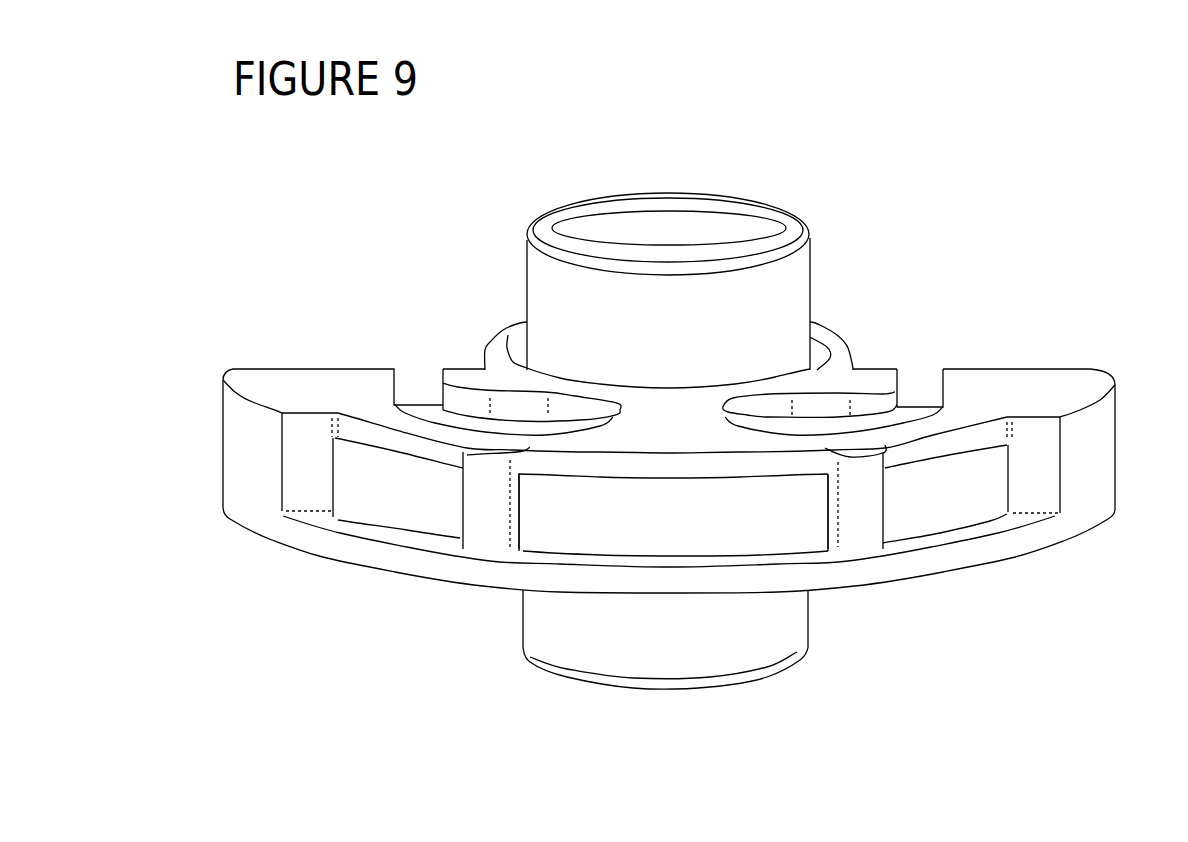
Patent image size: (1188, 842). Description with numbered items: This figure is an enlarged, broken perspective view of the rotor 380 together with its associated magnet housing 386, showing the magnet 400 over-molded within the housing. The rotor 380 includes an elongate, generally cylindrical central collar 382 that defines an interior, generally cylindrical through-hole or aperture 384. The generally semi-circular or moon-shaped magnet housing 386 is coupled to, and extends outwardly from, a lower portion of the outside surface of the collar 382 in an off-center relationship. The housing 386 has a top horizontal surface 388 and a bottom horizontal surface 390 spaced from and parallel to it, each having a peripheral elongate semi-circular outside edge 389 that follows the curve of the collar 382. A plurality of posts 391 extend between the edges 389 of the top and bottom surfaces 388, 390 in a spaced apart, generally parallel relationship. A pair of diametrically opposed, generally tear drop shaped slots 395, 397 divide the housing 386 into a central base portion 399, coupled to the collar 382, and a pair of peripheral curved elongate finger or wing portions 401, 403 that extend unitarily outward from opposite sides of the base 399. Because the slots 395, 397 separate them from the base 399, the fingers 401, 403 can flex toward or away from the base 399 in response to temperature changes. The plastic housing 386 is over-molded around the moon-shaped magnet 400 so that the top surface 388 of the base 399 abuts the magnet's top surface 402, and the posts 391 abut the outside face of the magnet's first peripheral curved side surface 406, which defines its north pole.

The rotor 380 is at (693, 421).
The central collar 382 is at (797, 300).
The through-hole or aperture 384 is at (688, 232).
The magnet housing 386 is at (1047, 553).
The top horizontal surface 388 is at (707, 437).
The peripheral elongate semi-circular outside edge 389 is at (771, 470).
The bottom horizontal surface 390 is at (883, 583).
The posts 391 is at (483, 518).
The tear drop shaped slot 395 is at (458, 398).
The tear drop shaped slot 397 is at (890, 397).
The central base portion 399 is at (673, 418).
The magnet 400 is at (415, 505).
The finger or wing portion 401 is at (318, 392).
The top surface of magnet 402 is at (913, 417).
The finger or wing portion 403 is at (1038, 398).
The first peripheral curved side surface 406 is at (563, 527).